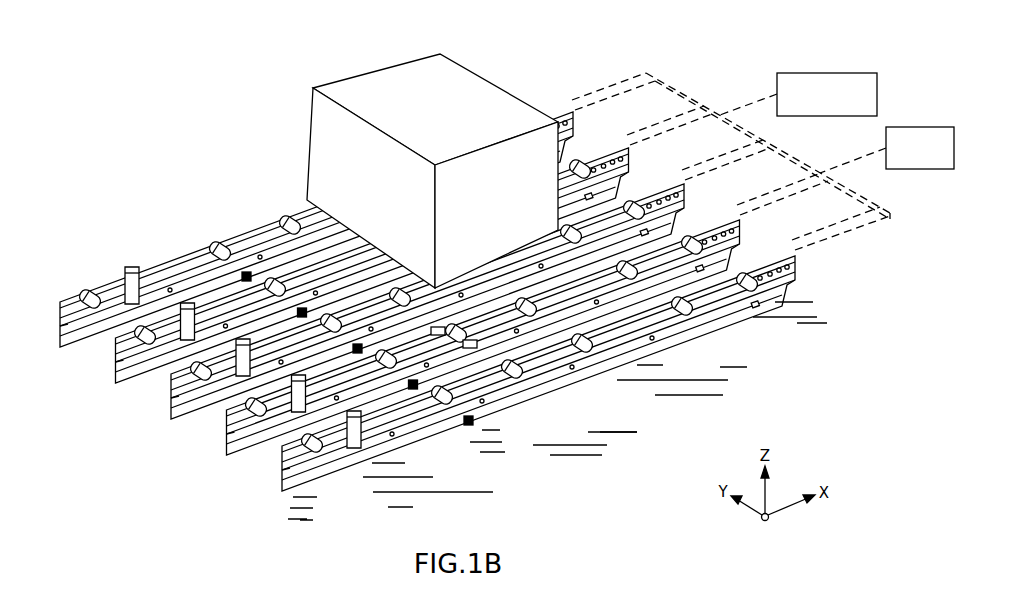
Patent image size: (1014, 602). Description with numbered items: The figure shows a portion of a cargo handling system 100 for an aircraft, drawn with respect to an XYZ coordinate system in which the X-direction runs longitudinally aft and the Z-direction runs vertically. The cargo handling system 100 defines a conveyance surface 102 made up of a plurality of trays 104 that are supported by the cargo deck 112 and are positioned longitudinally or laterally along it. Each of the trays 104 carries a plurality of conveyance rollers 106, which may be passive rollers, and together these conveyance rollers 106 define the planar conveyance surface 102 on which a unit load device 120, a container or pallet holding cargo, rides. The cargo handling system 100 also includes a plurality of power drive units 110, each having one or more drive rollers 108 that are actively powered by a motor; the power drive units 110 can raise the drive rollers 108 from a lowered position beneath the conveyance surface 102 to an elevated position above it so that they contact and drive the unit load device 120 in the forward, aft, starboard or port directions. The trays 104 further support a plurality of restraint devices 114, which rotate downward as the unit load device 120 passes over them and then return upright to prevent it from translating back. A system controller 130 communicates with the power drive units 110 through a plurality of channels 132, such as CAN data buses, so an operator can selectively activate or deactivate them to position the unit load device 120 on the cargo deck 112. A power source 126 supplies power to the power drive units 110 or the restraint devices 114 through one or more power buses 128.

The cargo handling system 100 is at (494, 282).
The conveyance surface 102 is at (414, 320).
The trays 104 is at (620, 172).
The conveyance rollers 106 is at (218, 253).
The drive rollers 108 is at (472, 346).
The power drive units 110 is at (438, 348).
The cargo deck 112 is at (677, 372).
The restraint devices 114 is at (352, 448).
The unit load device 120 is at (458, 78).
The power source 126 is at (925, 127).
The power buses 128 is at (832, 245).
The system controller 130 is at (793, 73).
The channels 132 is at (612, 86).